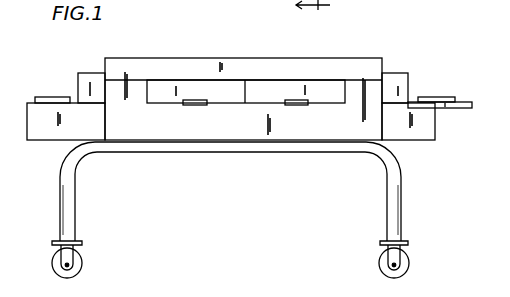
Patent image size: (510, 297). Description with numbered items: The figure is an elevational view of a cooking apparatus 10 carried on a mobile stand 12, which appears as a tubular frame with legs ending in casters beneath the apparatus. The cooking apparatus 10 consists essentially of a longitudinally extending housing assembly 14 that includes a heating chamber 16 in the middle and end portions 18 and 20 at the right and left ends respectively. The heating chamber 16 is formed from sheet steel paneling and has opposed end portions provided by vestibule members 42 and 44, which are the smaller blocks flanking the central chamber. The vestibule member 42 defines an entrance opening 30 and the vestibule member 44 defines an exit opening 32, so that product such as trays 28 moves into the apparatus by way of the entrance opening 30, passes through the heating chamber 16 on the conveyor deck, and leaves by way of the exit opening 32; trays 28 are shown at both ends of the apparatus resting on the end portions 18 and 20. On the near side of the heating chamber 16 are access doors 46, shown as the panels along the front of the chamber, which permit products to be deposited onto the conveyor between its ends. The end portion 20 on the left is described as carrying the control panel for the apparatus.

The cooking apparatus 10 is at (256, 46).
The mobile stand 12 is at (401, 215).
The housing assembly 14 is at (340, 55).
The heating chamber 16 is at (165, 125).
The end portion 18 is at (436, 128).
The end portion 20 is at (27, 135).
The trays 28 is at (57, 96).
The entrance opening 30 is at (412, 88).
The exit opening 32 is at (77, 75).
The vestibule member 42 is at (401, 74).
The vestibule member 44 is at (96, 72).
The access doors 46 is at (262, 97).